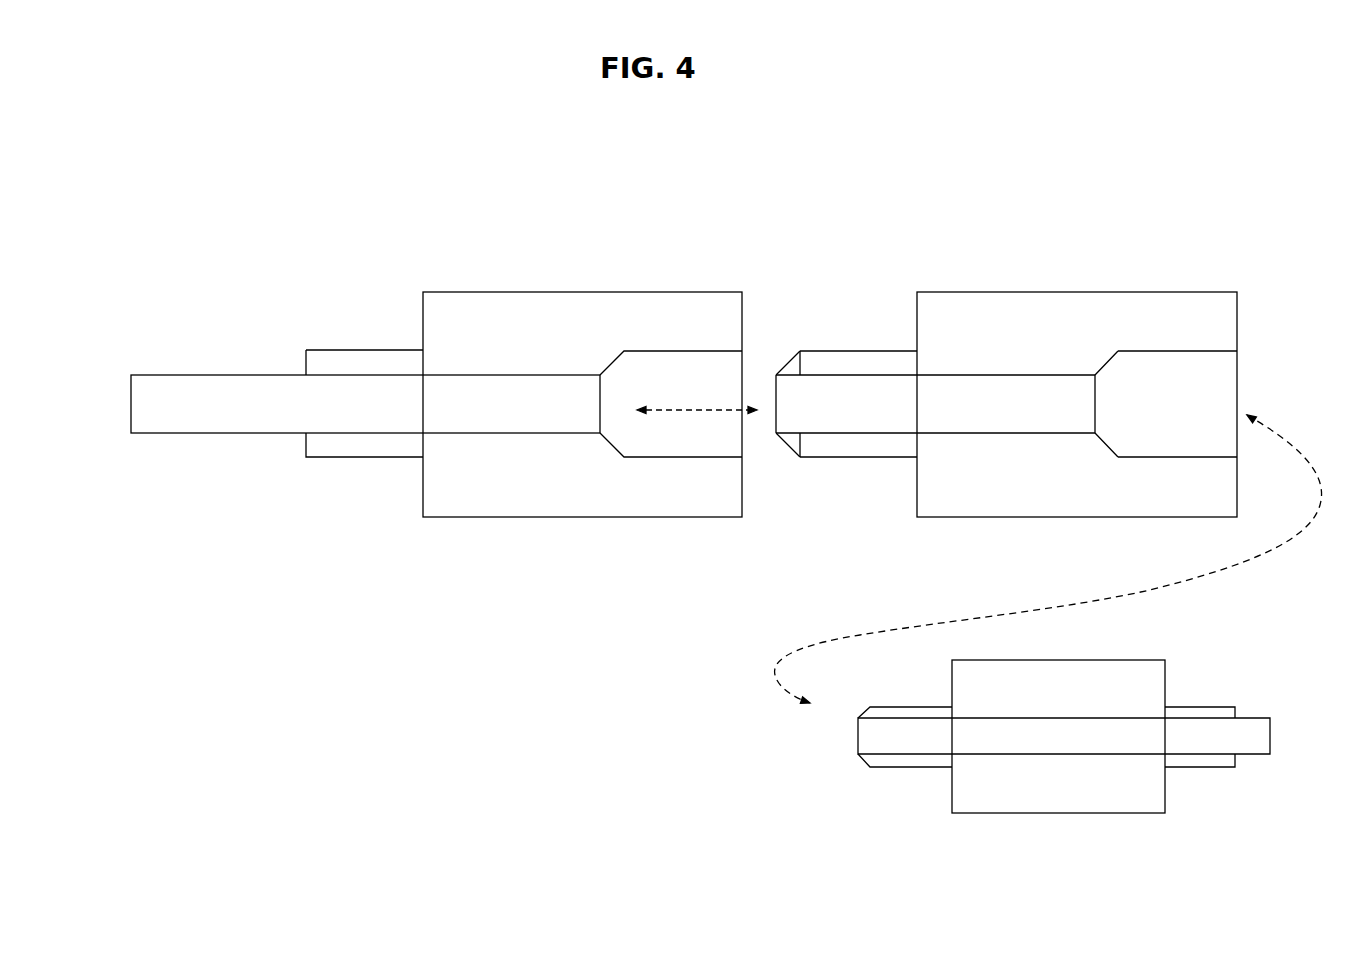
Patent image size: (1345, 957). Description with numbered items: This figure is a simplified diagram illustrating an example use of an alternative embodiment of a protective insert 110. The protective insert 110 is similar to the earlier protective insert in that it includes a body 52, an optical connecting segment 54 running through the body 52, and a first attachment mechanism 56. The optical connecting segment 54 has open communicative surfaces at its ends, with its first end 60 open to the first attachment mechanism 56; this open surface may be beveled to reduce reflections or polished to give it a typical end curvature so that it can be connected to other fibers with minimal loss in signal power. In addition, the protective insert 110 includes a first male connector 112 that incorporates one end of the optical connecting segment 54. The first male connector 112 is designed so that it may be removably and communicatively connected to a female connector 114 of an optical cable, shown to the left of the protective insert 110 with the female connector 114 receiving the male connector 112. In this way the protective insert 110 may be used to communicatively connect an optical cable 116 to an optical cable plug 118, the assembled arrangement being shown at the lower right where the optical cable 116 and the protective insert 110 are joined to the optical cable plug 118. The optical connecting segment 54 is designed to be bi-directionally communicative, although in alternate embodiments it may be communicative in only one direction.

The body 52 is at (1008, 290).
The optical connecting segment 54 is at (1005, 437).
The first attachment mechanism 56 is at (1190, 383).
The first end 60 is at (1100, 405).
The protective insert 110 is at (986, 332).
The first male connector 112 is at (775, 393).
The female connector 114 is at (647, 518).
The optical cable 116 is at (283, 437).
The optical cable plug 118 is at (1005, 815).